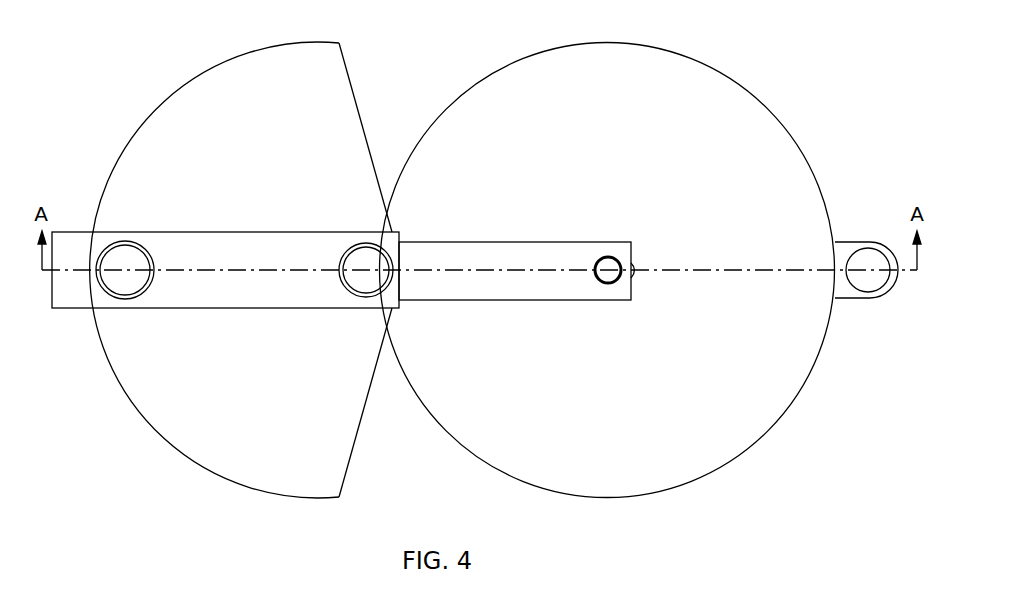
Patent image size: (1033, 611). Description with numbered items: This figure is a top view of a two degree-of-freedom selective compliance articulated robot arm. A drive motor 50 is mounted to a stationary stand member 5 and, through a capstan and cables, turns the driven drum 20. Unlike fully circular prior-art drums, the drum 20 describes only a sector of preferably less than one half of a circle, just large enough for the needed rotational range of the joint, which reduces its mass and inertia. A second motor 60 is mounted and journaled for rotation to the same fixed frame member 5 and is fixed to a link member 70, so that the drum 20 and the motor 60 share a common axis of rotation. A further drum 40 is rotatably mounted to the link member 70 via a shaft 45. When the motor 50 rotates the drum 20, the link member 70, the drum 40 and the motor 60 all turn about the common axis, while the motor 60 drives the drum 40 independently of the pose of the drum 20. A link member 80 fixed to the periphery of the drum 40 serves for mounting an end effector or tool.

The stationary stand member 5 is at (90, 311).
The driven drum 20 is at (198, 433).
The drum 40 is at (463, 444).
The shaft 45 is at (608, 283).
The drive motor 50 is at (114, 243).
The motor 60 is at (372, 243).
The link member 70 is at (435, 300).
The link member 80 is at (880, 285).